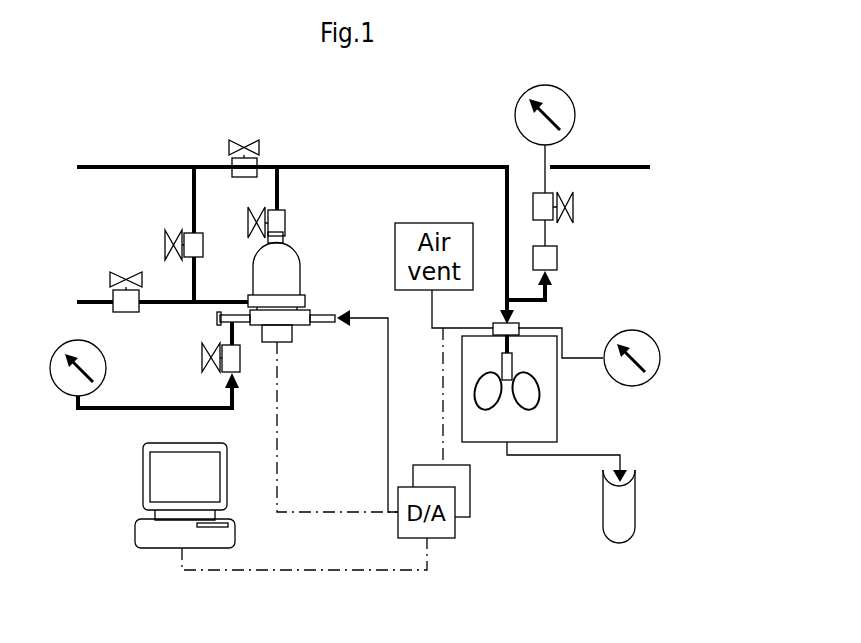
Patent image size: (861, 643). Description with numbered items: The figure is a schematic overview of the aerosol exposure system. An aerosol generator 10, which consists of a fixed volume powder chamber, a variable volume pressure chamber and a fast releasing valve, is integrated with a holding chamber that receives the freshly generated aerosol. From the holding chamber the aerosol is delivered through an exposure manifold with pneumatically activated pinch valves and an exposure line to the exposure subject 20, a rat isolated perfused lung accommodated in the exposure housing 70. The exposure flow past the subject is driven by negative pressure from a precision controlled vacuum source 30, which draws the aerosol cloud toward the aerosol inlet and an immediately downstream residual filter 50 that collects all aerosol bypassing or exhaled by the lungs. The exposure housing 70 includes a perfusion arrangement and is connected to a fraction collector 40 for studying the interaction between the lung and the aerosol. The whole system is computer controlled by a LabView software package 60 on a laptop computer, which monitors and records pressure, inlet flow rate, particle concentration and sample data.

The aerosol generator 10 is at (293, 315).
The exposure subject 20 is at (525, 388).
The precision controlled vacuum source 30 is at (557, 98).
The fraction collector 40 is at (623, 520).
The residual filter 50 is at (557, 260).
The LabView software package 60 is at (172, 477).
The exposure housing 70 is at (547, 343).